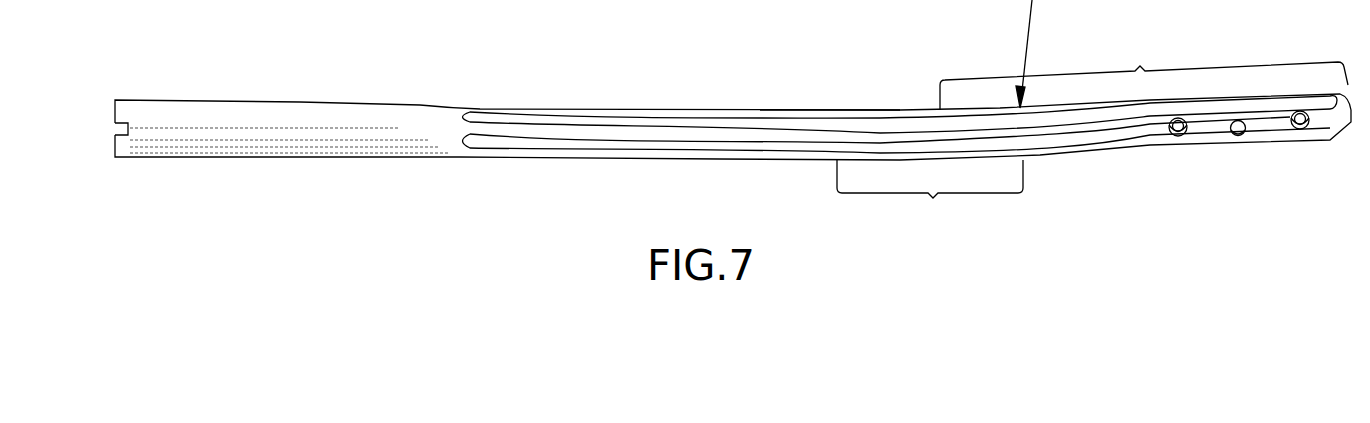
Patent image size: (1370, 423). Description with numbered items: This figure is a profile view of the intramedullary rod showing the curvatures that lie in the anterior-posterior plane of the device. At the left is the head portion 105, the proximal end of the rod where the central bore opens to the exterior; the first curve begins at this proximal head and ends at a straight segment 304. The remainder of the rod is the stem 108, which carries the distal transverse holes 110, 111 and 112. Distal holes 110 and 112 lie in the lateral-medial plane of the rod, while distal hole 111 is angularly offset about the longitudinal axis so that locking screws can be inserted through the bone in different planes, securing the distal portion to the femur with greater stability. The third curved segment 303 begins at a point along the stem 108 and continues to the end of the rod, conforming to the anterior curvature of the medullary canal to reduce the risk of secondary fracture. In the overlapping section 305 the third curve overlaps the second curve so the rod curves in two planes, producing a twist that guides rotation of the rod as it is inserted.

The head portion 105 is at (214, 100).
The straight segment 304 is at (114, 128).
The stem 108 is at (838, 108).
The third curved segment 303 is at (1140, 66).
The overlapping section 305 is at (933, 198).
The distal transverse hole 110 is at (1178, 133).
The distal transverse hole 111 is at (1240, 134).
The distal transverse hole 112 is at (1303, 128).